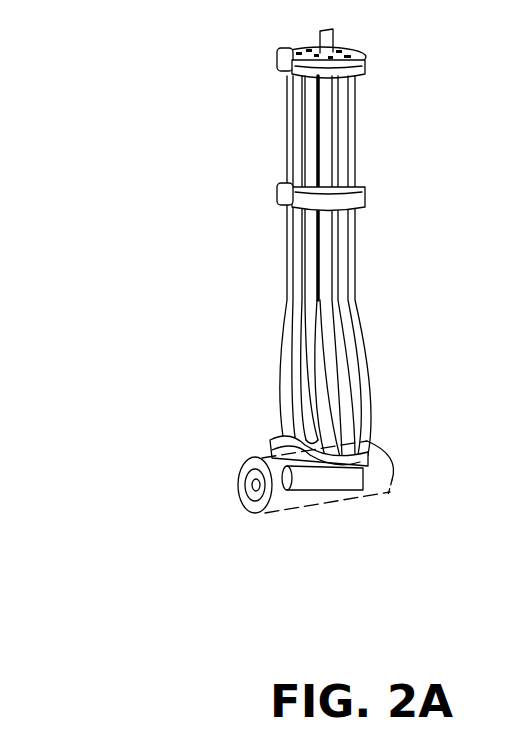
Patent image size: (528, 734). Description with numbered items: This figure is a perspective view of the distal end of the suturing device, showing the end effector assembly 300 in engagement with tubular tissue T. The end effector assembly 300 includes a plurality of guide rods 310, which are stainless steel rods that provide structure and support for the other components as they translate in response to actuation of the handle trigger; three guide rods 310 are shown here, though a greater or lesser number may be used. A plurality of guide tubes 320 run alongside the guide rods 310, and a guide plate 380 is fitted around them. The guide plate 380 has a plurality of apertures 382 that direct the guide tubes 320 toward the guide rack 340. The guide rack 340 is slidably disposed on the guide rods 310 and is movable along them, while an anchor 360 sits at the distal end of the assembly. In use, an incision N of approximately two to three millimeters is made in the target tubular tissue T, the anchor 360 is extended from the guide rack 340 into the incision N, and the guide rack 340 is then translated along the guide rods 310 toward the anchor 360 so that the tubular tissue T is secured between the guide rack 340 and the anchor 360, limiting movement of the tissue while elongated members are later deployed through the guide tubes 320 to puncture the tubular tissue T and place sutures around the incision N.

The end effector assembly 300 is at (105, 204).
The guide rods 310 is at (313, 383).
The guide tubes 320 is at (363, 380).
The guide rack 340 is at (360, 470).
The anchor 360 is at (262, 485).
The guide plate 380 is at (345, 200).
The apertures 382 is at (292, 182).
The incision N is at (285, 500).
The tubular tissue T is at (387, 497).